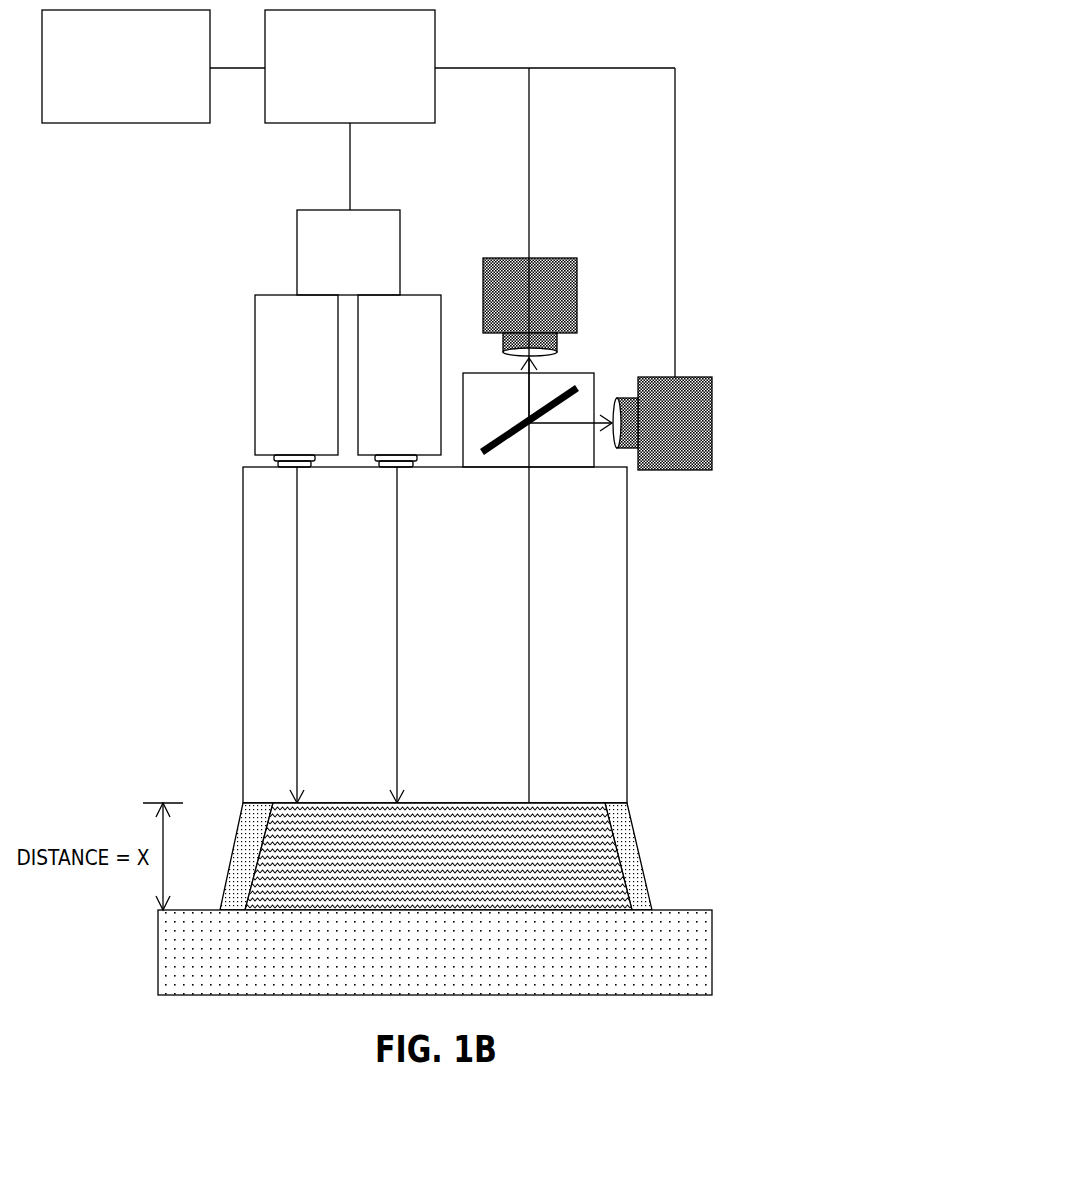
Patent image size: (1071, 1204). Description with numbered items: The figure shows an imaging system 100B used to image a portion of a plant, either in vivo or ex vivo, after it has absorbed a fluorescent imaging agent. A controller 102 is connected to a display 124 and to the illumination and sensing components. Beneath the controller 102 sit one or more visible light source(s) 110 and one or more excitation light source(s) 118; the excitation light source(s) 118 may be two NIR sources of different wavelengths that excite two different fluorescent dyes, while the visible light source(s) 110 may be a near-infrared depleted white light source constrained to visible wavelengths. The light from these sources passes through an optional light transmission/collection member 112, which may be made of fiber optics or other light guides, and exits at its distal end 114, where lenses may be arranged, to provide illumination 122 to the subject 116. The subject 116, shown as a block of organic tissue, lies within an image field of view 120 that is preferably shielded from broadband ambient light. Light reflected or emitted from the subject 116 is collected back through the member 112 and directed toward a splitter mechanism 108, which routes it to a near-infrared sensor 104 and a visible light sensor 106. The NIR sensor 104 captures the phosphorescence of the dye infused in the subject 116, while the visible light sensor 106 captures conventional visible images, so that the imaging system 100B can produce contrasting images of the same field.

The imaging system 100B is at (792, 85).
The controller 102 is at (442, 193).
The near-infrared (NIR) sensor 104 is at (558, 275).
The visible light sensor 106 is at (700, 375).
The splitter mechanism 108 is at (593, 372).
The visible light source(s) 110 is at (255, 295).
The light transmission/collection member 112 is at (627, 650).
The distal end 114 is at (272, 803).
The subject 116 is at (710, 907).
The excitation light source(s) 118 is at (427, 295).
The image field of view 120 is at (605, 885).
The illumination 122 is at (245, 813).
The display 124 is at (126, 66).